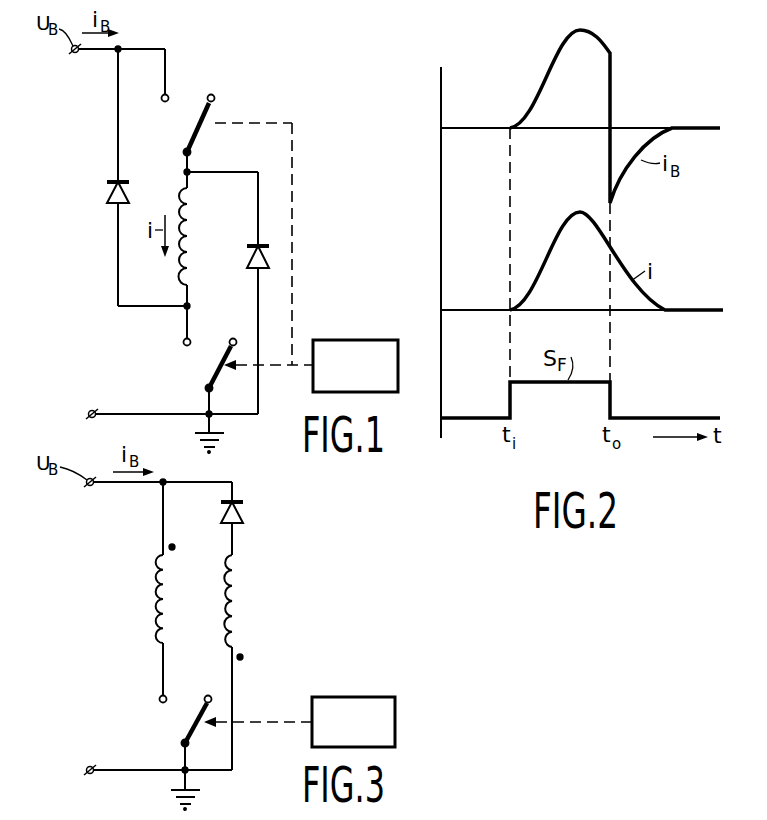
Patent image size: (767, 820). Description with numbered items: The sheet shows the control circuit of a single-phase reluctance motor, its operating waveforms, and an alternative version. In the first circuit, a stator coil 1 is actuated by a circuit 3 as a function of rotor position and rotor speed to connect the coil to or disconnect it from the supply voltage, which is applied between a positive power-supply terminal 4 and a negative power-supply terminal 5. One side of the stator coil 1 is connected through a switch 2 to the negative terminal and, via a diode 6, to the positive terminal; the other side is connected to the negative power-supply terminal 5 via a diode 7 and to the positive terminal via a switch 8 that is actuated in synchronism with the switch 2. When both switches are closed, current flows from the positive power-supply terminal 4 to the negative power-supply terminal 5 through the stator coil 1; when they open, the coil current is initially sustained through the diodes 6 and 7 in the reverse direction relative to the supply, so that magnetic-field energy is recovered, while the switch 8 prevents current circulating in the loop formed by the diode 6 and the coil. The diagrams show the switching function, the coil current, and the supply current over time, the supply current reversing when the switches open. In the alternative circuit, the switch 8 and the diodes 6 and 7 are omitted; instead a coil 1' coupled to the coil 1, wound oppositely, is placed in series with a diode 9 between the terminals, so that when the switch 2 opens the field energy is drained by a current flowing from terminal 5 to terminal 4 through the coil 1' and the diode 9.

In FIG. 1, the stator coil 1 is at (199, 236).
In FIG. 3, the stator coil 1 is at (145, 599).
In FIG. 3, the coil 1' is at (254, 601).
In FIG. 1, the switch 2 is at (212, 368).
In FIG. 3, the switch 2 is at (188, 731).
In FIG. 1, the circuit 3 is at (362, 312).
In FIG. 3, the circuit 3 is at (358, 696).
In FIG. 1, the positive power-supply terminal 4 is at (76, 53).
In FIG. 3, the positive power-supply terminal 4 is at (89, 487).
In FIG. 1, the negative power-supply terminal 5 is at (91, 410).
In FIG. 3, the negative power-supply terminal 5 is at (89, 766).
In FIG. 1, the diode 6 is at (107, 192).
In FIG. 1, the diode 7 is at (247, 258).
In FIG. 1, the switch 8 is at (200, 124).
In FIG. 3, the diode 9 is at (244, 515).